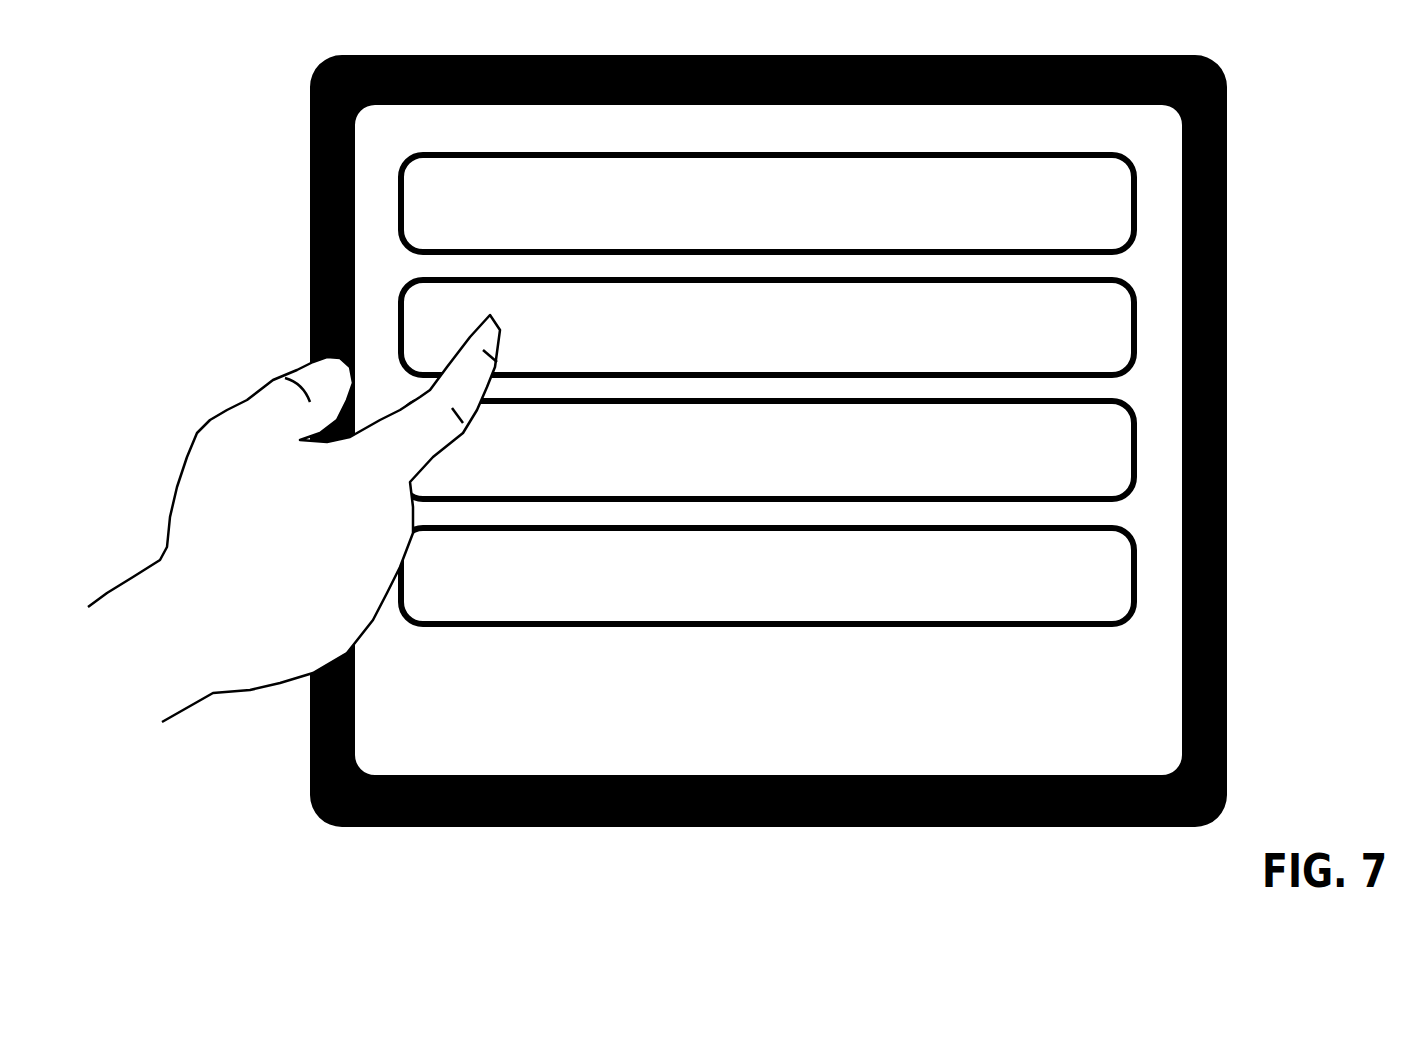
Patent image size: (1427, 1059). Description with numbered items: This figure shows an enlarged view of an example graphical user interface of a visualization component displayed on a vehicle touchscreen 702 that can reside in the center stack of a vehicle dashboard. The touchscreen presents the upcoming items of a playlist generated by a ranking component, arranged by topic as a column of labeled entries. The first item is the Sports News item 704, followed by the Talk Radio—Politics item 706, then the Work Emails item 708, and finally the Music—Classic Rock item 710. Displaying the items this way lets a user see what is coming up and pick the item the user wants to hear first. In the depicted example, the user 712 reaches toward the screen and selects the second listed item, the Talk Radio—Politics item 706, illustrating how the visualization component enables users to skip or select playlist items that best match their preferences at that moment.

The mobile device 702 is at (1218, 66).
The Sports News item 704 is at (1105, 202).
The Talk Radio—Politics item 706 is at (1102, 323).
The Work Emails item 708 is at (1102, 457).
The Music—Classic Rock item 710 is at (1102, 583).
The user 712 is at (197, 417).